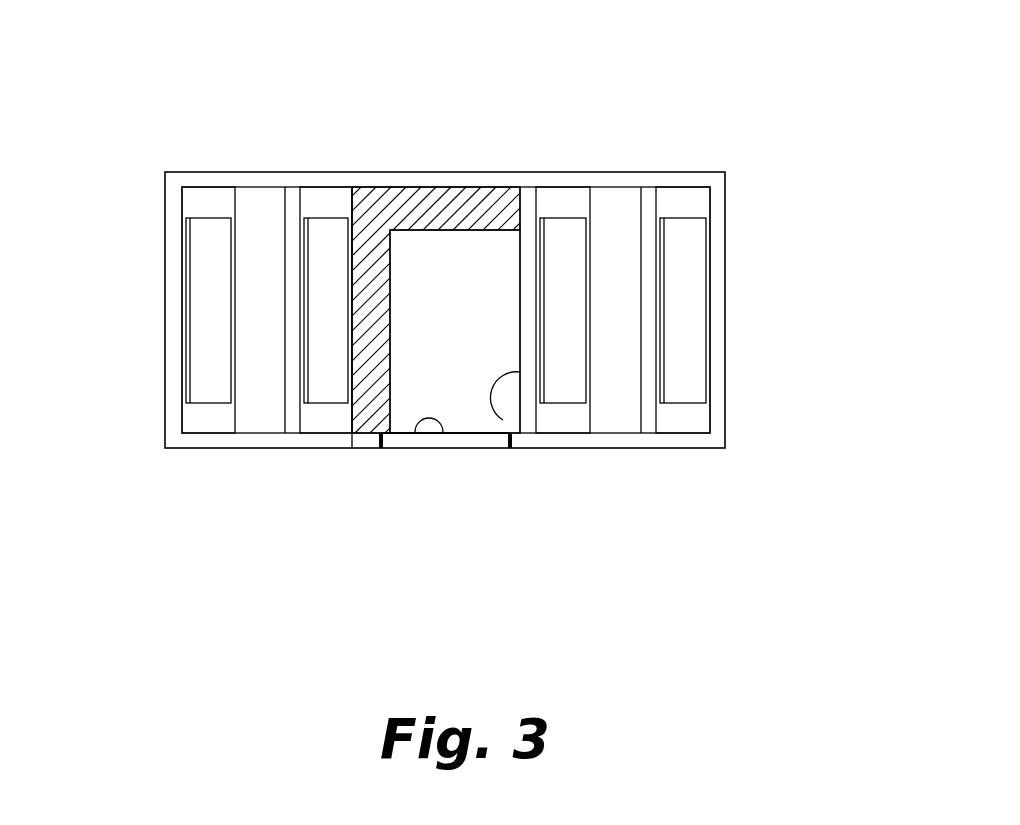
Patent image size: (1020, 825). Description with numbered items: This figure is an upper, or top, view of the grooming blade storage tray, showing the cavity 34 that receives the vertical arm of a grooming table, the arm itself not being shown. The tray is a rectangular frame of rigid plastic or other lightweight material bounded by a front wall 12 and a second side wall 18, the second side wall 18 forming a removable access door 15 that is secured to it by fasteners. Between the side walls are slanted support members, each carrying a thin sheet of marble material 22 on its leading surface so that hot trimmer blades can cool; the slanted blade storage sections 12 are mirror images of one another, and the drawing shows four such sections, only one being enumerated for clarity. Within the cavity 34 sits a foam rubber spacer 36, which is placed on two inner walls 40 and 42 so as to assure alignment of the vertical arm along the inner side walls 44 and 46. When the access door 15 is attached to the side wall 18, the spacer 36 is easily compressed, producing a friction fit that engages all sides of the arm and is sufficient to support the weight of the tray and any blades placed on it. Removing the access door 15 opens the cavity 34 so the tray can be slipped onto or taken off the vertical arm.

The front wall 12 is at (205, 420).
The access door 15 is at (489, 450).
The second side wall 18 is at (643, 448).
The thin sheet of marble material 22 is at (200, 255).
The cavity 34 is at (480, 260).
The foam rubber spacer 36 is at (362, 188).
The inner wall 40 is at (450, 187).
The inner wall 42 is at (352, 425).
The inner side wall 44 is at (440, 428).
The inner side wall 46 is at (503, 420).